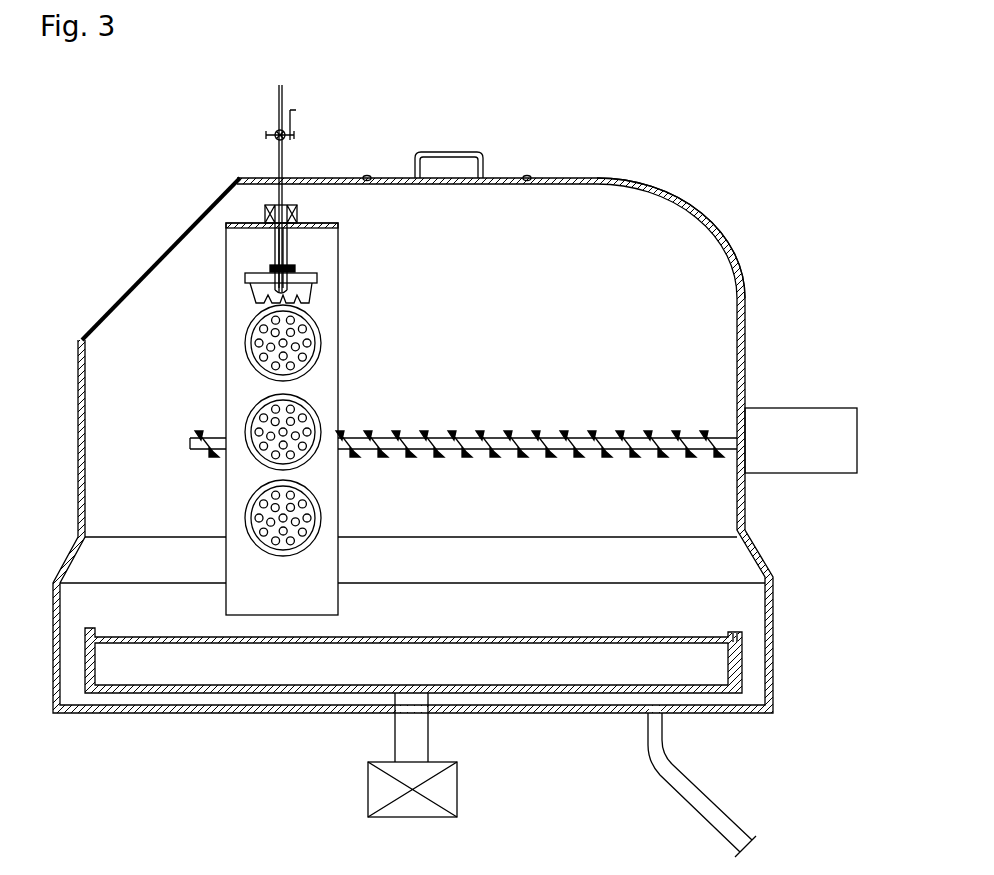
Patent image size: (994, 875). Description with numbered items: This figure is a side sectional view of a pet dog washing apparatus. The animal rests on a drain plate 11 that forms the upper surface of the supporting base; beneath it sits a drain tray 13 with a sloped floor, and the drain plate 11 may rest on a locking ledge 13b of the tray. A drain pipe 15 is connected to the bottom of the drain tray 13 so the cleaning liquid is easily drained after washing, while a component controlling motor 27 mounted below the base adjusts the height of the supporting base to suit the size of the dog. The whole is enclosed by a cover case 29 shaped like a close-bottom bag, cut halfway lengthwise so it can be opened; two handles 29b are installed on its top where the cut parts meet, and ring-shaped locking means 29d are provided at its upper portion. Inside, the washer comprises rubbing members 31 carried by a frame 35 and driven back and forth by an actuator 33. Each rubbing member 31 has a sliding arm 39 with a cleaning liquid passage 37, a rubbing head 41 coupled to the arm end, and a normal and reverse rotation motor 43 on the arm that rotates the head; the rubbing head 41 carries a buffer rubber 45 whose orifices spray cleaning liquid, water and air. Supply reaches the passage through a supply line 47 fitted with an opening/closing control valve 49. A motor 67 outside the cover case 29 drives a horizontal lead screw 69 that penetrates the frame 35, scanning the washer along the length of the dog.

The drain plate 11 is at (655, 632).
The drain tray 13 is at (330, 695).
The locking ledge 13b is at (728, 640).
The drain pipe 15 is at (690, 787).
The component controlling motor 27 is at (460, 790).
The cover case 29 is at (572, 178).
The handles 29b is at (448, 152).
The ring-shaped locking means 29d is at (367, 176).
The rubbing members 31 is at (322, 298).
The actuator 33 is at (265, 210).
The frame 35 is at (320, 222).
The cleaning liquid passage 37 is at (290, 258).
The sliding arm 39 is at (285, 244).
The rubbing head 41 is at (318, 288).
The normal and reverse rotation motor 43 is at (268, 268).
The buffer rubber 45 is at (252, 304).
The supply line 47 is at (284, 97).
The opening/closing control valve 49 is at (276, 133).
The motor 67 is at (800, 407).
The lead screw 69 is at (541, 436).